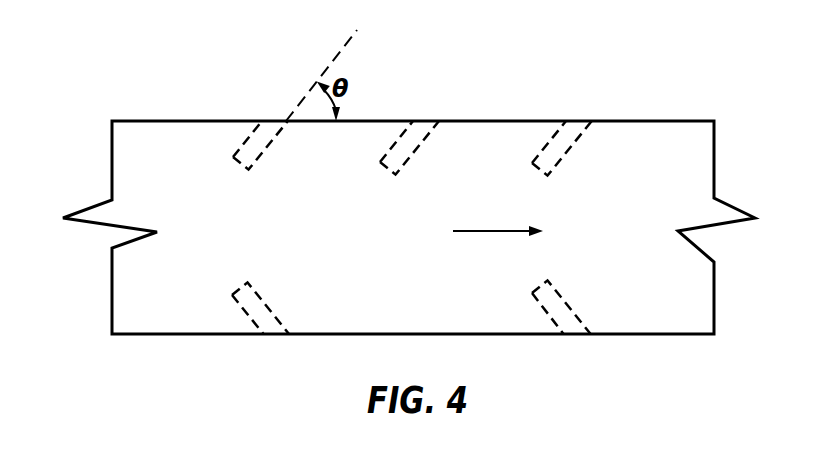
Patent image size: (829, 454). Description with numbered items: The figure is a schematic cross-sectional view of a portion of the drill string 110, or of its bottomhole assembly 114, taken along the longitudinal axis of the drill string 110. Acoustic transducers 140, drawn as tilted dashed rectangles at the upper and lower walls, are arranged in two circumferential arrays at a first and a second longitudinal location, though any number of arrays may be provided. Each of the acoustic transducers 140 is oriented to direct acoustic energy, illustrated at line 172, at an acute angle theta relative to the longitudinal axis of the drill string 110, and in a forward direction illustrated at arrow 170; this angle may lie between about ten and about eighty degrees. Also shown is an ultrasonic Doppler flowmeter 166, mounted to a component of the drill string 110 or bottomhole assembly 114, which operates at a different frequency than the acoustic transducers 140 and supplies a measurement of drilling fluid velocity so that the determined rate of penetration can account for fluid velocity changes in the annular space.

The drill string 110 is at (246, 243).
The bottomhole assembly 114 is at (402, 243).
The acoustic transducers 140 is at (263, 157).
The ultrasonic Doppler flowmeter 166 is at (418, 147).
The arrow 170 is at (498, 230).
The line 172 is at (342, 47).